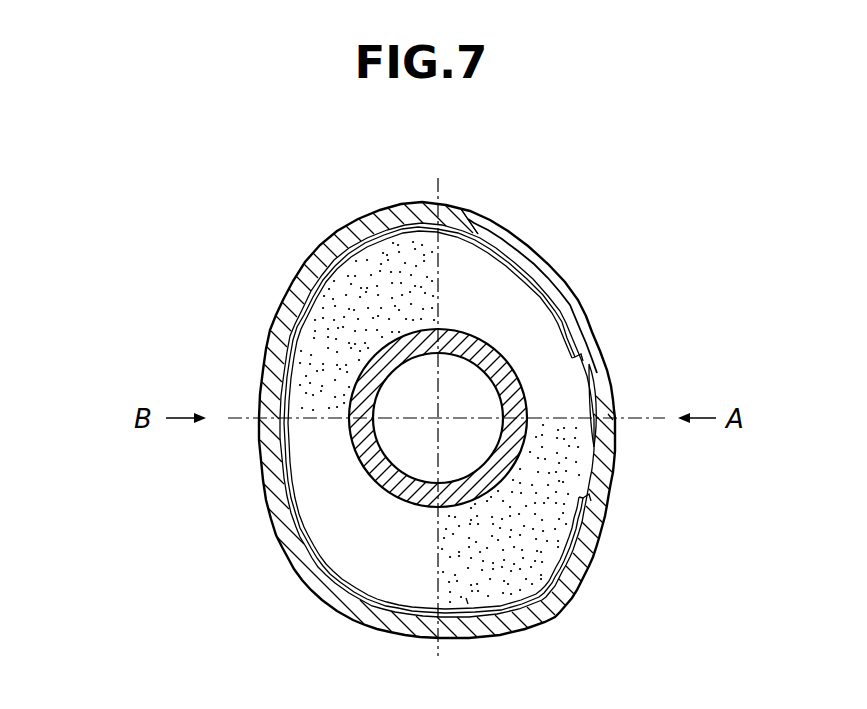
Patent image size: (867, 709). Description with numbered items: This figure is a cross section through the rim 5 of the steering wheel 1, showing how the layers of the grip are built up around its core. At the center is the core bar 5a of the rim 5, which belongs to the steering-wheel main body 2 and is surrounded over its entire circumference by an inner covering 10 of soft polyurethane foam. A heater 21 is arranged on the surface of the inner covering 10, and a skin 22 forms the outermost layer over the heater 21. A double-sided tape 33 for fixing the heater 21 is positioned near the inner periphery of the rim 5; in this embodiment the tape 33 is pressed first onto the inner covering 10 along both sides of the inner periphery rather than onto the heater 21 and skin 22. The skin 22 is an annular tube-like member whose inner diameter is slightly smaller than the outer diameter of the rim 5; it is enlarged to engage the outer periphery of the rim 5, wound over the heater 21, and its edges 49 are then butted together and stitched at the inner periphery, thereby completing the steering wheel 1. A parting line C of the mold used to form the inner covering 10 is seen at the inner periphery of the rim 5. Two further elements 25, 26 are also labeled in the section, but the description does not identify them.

The steering wheel 1 is at (194, 191).
The steering-wheel main body 2 is at (180, 237).
The rim 5 is at (303, 270).
The core bar 5a is at (401, 456).
The inner covering 10 is at (306, 355).
The heater 21 is at (473, 233).
The skin 22 is at (518, 242).
The hatched ring wall 25 is at (362, 240).
The inner liner layer 26 is at (552, 302).
The double-sided tape 33 is at (527, 280).
The edges 49 is at (613, 420).
The parting line C is at (613, 420).